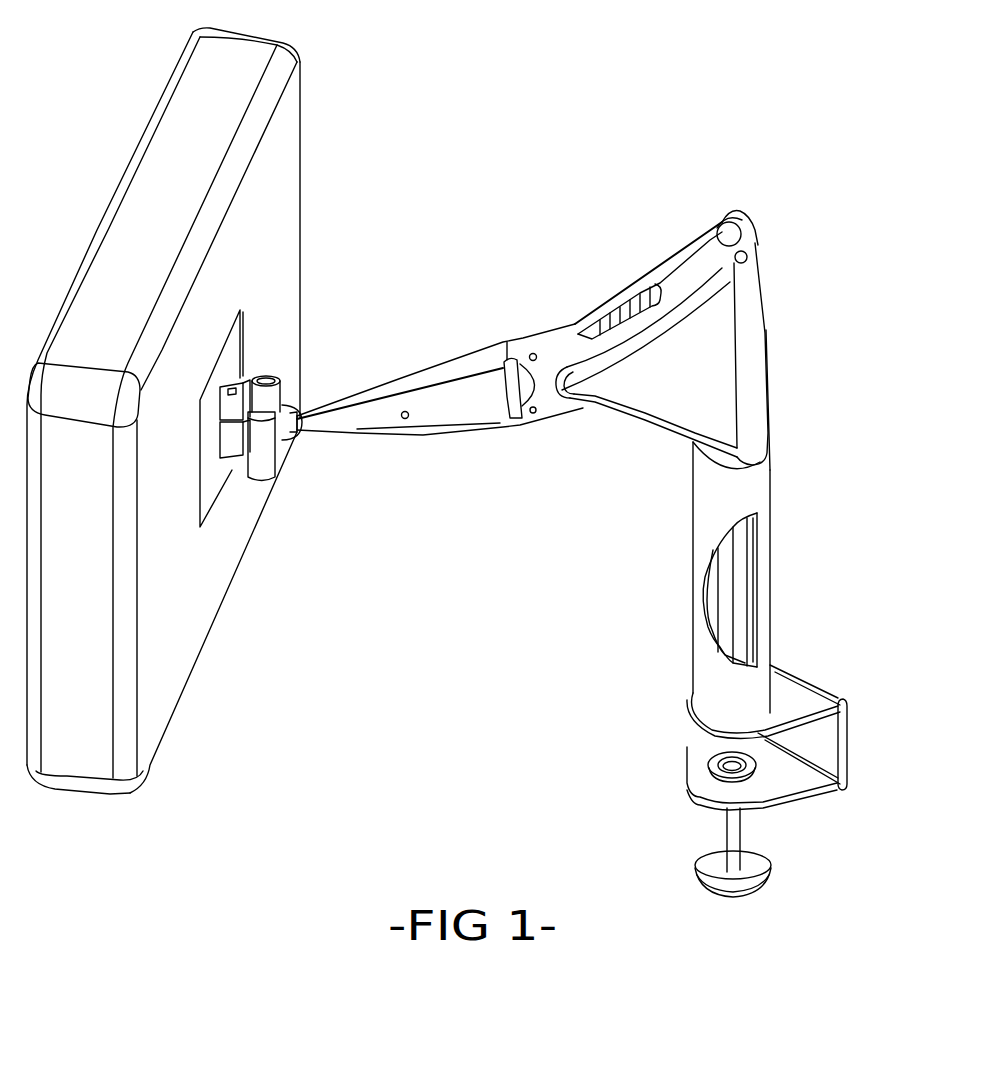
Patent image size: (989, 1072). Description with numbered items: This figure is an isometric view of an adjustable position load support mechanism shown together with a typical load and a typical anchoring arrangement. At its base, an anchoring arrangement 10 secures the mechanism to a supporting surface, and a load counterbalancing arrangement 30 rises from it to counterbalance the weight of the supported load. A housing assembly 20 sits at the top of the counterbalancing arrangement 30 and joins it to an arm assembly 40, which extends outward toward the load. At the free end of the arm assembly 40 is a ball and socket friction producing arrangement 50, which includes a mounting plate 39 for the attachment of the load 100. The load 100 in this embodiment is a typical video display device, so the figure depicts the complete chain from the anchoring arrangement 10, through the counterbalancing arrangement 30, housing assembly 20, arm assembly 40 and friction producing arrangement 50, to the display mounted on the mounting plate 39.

The anchoring arrangement 10 is at (677, 667).
The housing assembly 20 is at (722, 205).
The load counterbalancing arrangement 30 is at (740, 588).
The mounting plate 39 is at (218, 483).
The arm assembly 40 is at (530, 330).
The ball and socket friction producing arrangement 50 is at (312, 360).
The load 100 is at (93, 757).